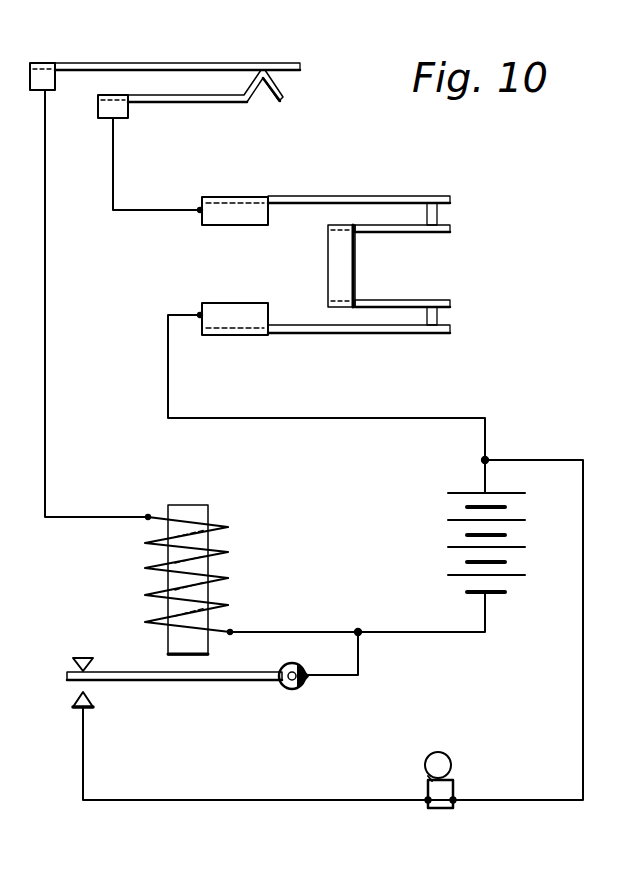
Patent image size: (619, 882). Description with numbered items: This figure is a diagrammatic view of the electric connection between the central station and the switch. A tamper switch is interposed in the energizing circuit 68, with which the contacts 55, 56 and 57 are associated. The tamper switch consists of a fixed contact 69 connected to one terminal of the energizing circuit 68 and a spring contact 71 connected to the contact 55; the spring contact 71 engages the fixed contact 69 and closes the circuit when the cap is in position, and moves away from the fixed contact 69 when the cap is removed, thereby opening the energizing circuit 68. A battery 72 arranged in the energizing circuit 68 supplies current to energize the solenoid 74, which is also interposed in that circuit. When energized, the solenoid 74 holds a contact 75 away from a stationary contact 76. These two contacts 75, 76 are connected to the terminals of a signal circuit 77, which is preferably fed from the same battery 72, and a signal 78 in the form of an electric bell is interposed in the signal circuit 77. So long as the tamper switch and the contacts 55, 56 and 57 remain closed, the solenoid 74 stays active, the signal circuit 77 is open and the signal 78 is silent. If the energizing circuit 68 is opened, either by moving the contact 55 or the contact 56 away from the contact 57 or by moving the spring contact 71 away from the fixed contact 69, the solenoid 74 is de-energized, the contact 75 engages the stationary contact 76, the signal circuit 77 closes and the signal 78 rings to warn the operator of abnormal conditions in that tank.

The fixed contact 69 is at (108, 63).
The spring contact 71 is at (207, 103).
The contact 55 is at (395, 196).
The contact 56 is at (357, 335).
The contact 57 is at (350, 263).
The energizing circuit 68 is at (165, 398).
The solenoid 74 is at (240, 549).
The battery 72 is at (456, 547).
The contact 75 is at (195, 682).
The stationary contact 76 is at (69, 701).
The signal circuit 77 is at (323, 798).
The signal 78 is at (447, 810).